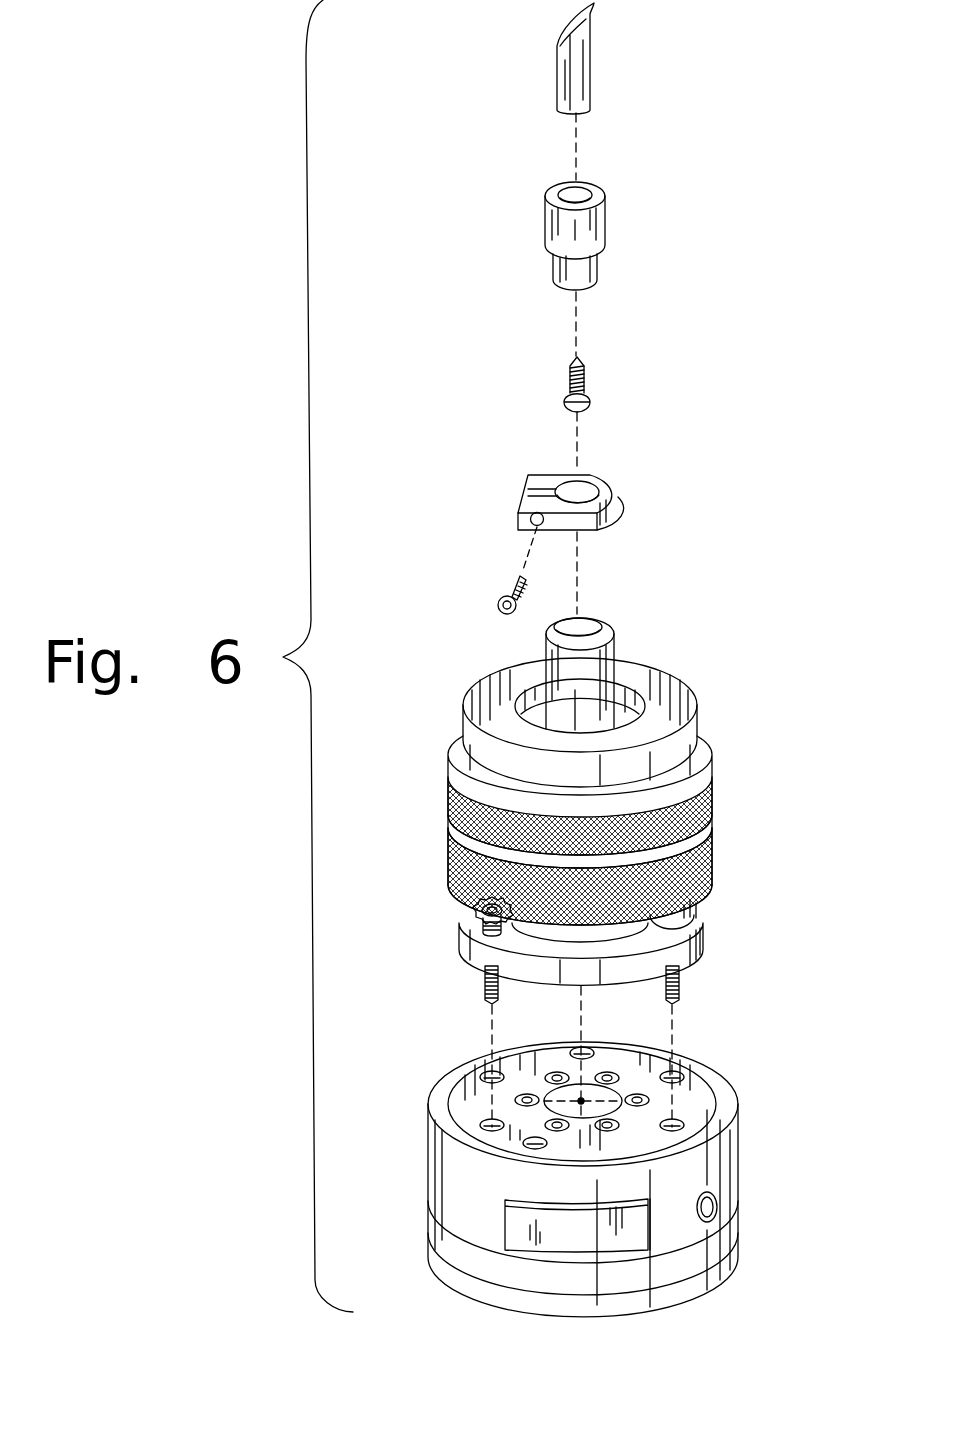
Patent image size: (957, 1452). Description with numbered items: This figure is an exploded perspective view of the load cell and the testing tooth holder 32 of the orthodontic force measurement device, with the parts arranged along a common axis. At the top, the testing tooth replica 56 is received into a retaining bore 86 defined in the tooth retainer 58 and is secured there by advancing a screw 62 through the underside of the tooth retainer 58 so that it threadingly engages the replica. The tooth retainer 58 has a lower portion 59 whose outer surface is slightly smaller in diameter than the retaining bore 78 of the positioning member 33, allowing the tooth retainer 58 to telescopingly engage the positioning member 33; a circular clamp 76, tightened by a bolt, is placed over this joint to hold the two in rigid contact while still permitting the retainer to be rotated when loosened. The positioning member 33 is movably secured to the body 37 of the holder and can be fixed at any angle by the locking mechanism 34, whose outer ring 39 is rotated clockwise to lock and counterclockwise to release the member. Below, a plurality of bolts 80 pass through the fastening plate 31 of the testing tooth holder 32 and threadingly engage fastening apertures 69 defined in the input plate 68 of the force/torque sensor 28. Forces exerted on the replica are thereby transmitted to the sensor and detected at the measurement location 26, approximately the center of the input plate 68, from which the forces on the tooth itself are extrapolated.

The measurement location 26 is at (581, 1101).
The force/torque sensor 28 is at (612, 1157).
The fastening plate 31 is at (704, 930).
The testing tooth holder 32 is at (741, 752).
The positioning member 33 is at (621, 643).
The locking mechanism 34 is at (566, 830).
The body 37 is at (452, 868).
The outer ring 39 is at (713, 790).
The testing tooth replica 56 is at (578, 62).
The tooth retainer 58 is at (606, 213).
The lower portion 59 is at (592, 272).
The screw 62 is at (588, 382).
The input plate 68 is at (556, 1056).
The fastening apertures 69 is at (673, 1125).
The circular clamp 76 is at (620, 508).
The retaining bore 78 is at (597, 629).
The bolts 80 is at (485, 917).
The retaining bore 86 is at (592, 191).